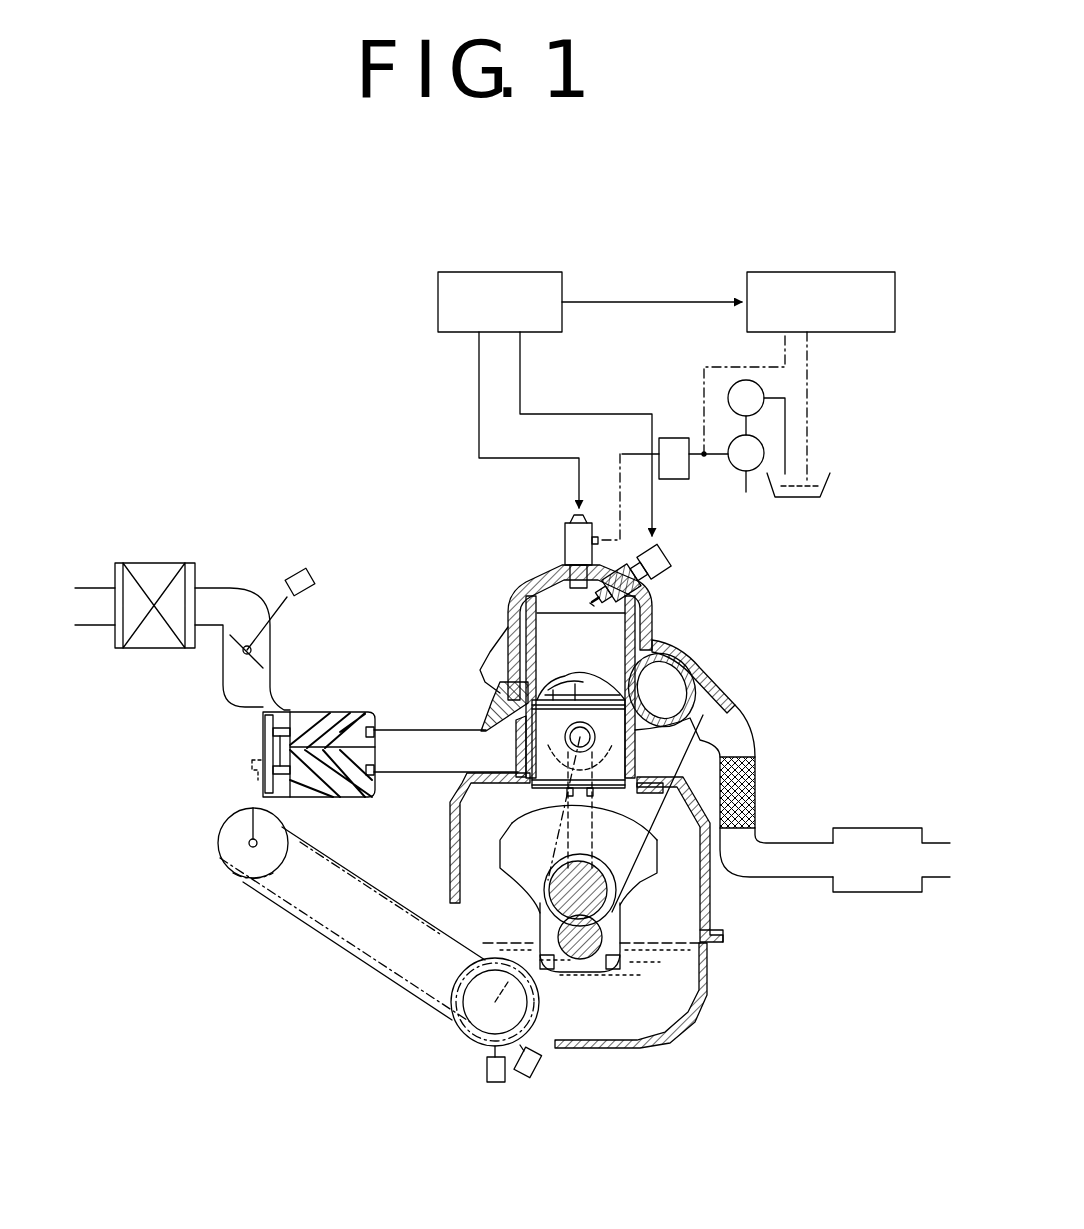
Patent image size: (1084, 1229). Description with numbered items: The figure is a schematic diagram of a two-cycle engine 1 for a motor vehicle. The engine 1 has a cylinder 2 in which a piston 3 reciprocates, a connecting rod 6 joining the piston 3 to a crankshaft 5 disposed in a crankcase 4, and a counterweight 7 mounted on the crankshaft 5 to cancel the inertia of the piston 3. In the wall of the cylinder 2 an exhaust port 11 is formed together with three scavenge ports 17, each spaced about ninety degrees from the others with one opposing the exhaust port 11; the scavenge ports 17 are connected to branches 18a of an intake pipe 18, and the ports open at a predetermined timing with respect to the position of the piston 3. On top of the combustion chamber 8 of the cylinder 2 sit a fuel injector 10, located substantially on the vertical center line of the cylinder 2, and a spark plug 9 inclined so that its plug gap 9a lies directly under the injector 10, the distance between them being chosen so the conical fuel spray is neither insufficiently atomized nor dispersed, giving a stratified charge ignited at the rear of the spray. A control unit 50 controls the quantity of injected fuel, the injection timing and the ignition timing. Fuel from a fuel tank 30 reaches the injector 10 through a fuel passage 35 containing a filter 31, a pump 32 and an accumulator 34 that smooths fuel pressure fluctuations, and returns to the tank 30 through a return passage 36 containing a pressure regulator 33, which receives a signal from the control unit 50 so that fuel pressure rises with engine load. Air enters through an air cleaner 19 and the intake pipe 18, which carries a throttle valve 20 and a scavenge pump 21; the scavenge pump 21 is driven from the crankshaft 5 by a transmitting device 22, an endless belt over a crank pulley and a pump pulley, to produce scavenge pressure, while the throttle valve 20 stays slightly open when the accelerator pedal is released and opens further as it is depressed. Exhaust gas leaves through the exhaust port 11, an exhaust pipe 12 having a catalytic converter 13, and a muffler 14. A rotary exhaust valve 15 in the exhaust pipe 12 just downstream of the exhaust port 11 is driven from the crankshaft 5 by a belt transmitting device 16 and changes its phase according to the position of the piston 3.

The two-cycle engine 1 is at (714, 913).
The cylinder 2 is at (522, 653).
The piston 3 is at (533, 791).
The crankcase 4 is at (500, 918).
The crankshaft 5 is at (552, 955).
The connecting rod 6 is at (588, 835).
The counterweight 7 is at (516, 830).
The combustion chamber 8 is at (558, 602).
The spark plug 9 is at (660, 559).
The plug gap 9a is at (595, 598).
The fuel injector 10 is at (565, 545).
The exhaust port 11 is at (620, 693).
The exhaust pipe 12 is at (797, 843).
The catalytic converter 13 is at (752, 783).
The muffler 14 is at (888, 828).
The rotary exhaust valve 15 is at (726, 698).
The transmitting device 16 is at (637, 880).
The scavenge port 17 is at (562, 680).
The intake pipe 18 is at (437, 776).
The branch of intake pipe 18a is at (735, 692).
The air cleaner 19 is at (165, 648).
The throttle valve 20 is at (268, 667).
The scavenge pump 21 is at (335, 800).
The transmitting device 22 is at (377, 970).
The fuel tank 30 is at (820, 494).
The filter 31 is at (766, 380).
The pump 32 is at (746, 492).
The pressure regulator 33 is at (747, 317).
The accumulator 34 is at (675, 437).
The fuel passage 35 is at (710, 460).
The return passage 36 is at (808, 428).
The control unit 50 is at (438, 308).